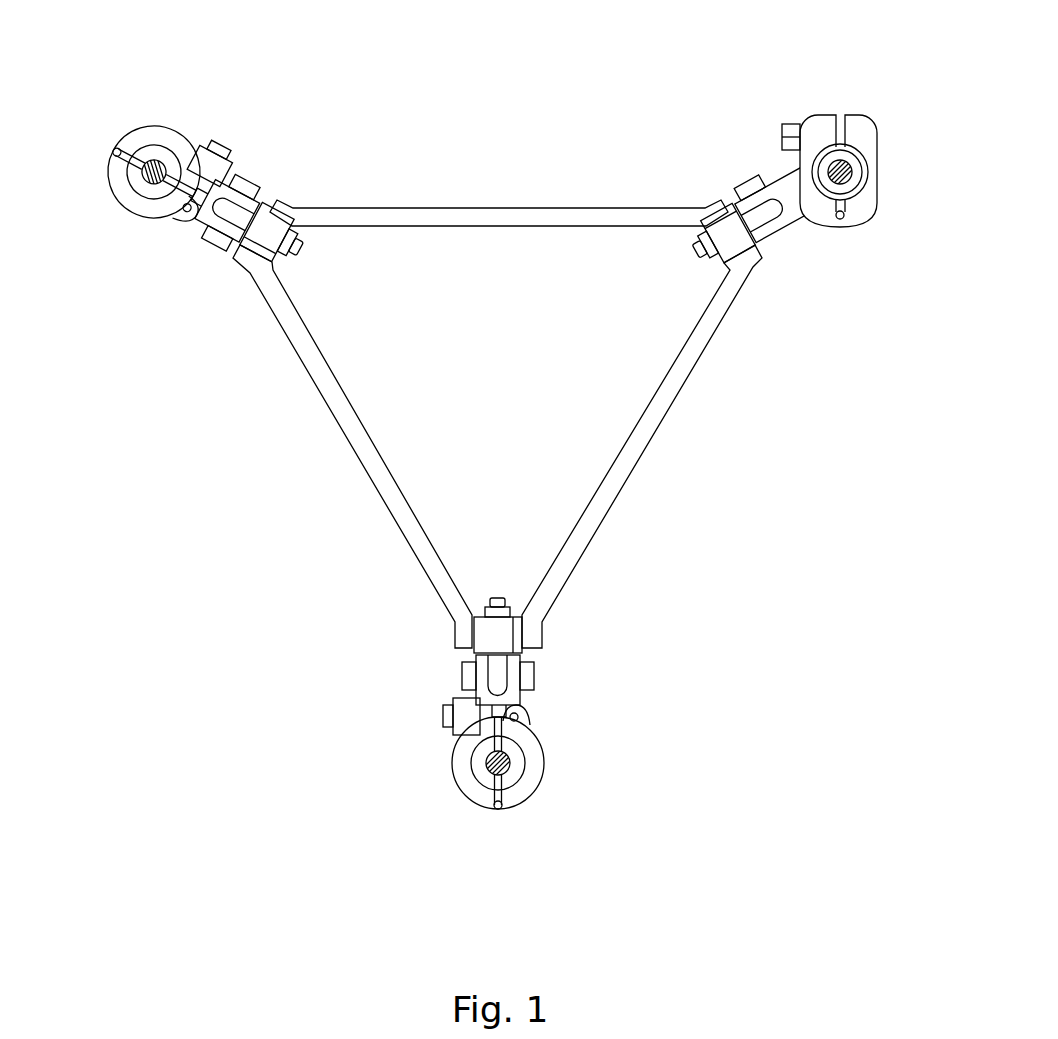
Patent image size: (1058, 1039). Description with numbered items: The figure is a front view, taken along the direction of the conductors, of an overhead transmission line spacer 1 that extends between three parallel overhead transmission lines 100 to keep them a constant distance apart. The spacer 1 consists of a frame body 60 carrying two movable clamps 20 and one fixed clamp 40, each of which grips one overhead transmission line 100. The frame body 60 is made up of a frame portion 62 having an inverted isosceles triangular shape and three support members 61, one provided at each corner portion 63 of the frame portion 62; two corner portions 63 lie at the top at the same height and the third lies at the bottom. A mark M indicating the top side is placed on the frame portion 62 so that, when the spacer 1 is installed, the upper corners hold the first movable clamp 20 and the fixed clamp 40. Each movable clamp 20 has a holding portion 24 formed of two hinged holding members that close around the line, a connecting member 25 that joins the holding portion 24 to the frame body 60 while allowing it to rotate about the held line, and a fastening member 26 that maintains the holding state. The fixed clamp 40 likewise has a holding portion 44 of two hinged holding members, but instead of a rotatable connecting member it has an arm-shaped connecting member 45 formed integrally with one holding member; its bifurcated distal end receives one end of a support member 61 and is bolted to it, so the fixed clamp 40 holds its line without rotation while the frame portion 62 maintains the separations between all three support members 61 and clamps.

The overhead transmission line spacer 1 is at (578, 132).
The mark M is at (504, 207).
The movable clamp 20 is at (180, 222).
The holding portion 24 is at (110, 192).
The connecting member 25 is at (232, 182).
The fastening member 26 is at (226, 158).
The fixed clamp 40 is at (884, 210).
The holding portion 44 is at (868, 226).
The connecting member 45 is at (773, 172).
The frame body 60 is at (676, 414).
The support member 61 is at (250, 222).
The frame portion 62 is at (657, 452).
The corner portion 63 is at (247, 268).
The overhead transmission line 100 is at (560, 806).